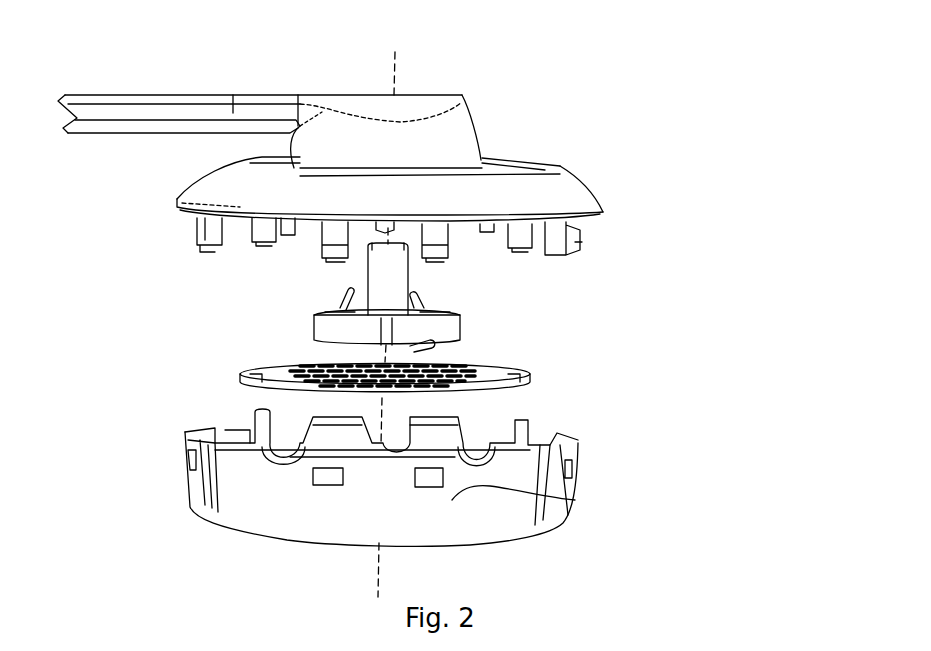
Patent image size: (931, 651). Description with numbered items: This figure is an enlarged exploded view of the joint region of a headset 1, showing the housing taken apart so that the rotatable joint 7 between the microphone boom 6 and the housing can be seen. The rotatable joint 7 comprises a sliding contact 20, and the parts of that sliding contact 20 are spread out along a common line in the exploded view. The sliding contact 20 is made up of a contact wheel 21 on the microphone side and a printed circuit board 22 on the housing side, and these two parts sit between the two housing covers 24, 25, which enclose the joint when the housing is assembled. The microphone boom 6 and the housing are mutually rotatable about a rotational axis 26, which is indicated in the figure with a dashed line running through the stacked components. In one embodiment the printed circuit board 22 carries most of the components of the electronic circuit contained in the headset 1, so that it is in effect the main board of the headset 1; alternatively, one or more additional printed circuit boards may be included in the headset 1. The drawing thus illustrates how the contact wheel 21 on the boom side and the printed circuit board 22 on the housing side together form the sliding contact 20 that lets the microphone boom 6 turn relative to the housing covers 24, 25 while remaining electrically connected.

The headset 1 is at (715, 257).
The microphone boom 6 is at (233, 95).
The rotatable joint 7 is at (698, 107).
The sliding contact 20 is at (303, 345).
The contact wheel 21 is at (450, 323).
The printed circuit board 22 is at (523, 368).
The housing cover 24 is at (545, 197).
The housing cover 25 is at (575, 500).
The rotational axis 26 is at (395, 52).